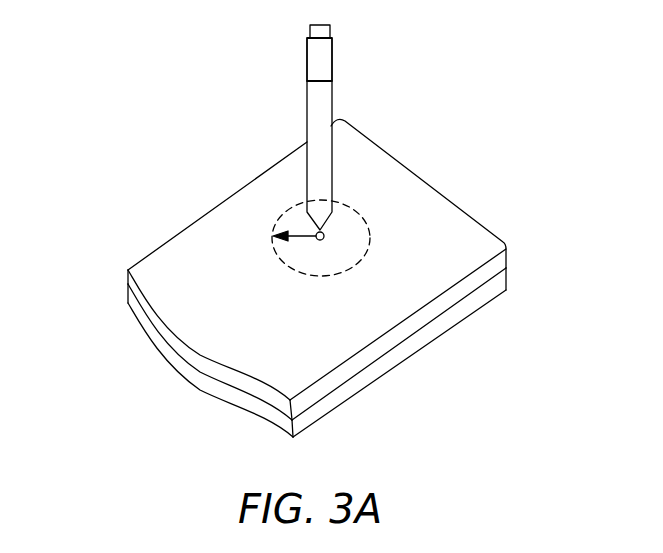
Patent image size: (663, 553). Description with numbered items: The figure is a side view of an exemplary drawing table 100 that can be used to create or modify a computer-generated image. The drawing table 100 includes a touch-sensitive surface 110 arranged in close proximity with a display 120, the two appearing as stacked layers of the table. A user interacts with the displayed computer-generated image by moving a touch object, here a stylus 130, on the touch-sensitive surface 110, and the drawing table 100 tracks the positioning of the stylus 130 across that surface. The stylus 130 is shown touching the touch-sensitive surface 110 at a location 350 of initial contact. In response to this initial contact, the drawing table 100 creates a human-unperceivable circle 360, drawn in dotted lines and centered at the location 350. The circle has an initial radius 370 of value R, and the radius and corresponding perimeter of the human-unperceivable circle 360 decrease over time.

The drawing table 100 is at (496, 102).
The touch-sensitive surface 110 is at (128, 285).
The display 120 is at (198, 383).
The stylus 130 is at (307, 117).
The location 350 is at (325, 236).
The human-unperceivable circle 360 is at (322, 278).
The initial radius 370 is at (303, 238).